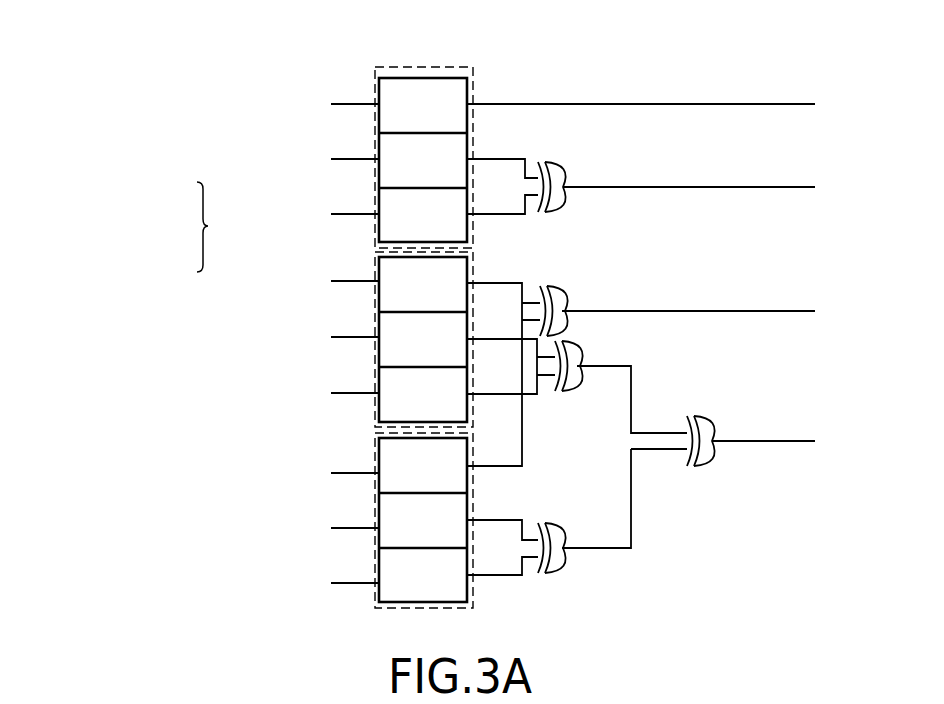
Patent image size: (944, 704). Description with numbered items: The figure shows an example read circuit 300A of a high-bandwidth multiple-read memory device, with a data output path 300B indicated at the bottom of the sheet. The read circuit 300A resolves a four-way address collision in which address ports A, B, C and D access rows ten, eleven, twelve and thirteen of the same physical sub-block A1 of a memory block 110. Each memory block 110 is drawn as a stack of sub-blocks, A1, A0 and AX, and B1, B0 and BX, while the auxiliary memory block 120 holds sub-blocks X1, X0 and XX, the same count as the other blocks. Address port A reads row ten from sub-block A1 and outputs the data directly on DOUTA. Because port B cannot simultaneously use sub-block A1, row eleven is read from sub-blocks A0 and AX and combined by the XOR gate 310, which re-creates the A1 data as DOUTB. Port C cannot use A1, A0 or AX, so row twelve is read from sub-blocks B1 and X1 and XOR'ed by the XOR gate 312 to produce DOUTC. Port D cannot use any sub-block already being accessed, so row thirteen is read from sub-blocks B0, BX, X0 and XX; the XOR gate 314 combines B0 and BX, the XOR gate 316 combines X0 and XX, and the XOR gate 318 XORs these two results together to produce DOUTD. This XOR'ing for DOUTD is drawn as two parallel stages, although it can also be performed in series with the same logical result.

The read circuit 300A is at (270, 88).
The data output path 300B is at (75, 702).
The memory block 110 is at (379, 232).
The auxiliary memory block 120 is at (473, 603).
The XOR gate 310 is at (548, 170).
The XOR gate 312 is at (553, 294).
The XOR gate 314 is at (566, 383).
The XOR gate 316 is at (555, 532).
The XOR gate 318 is at (706, 457).